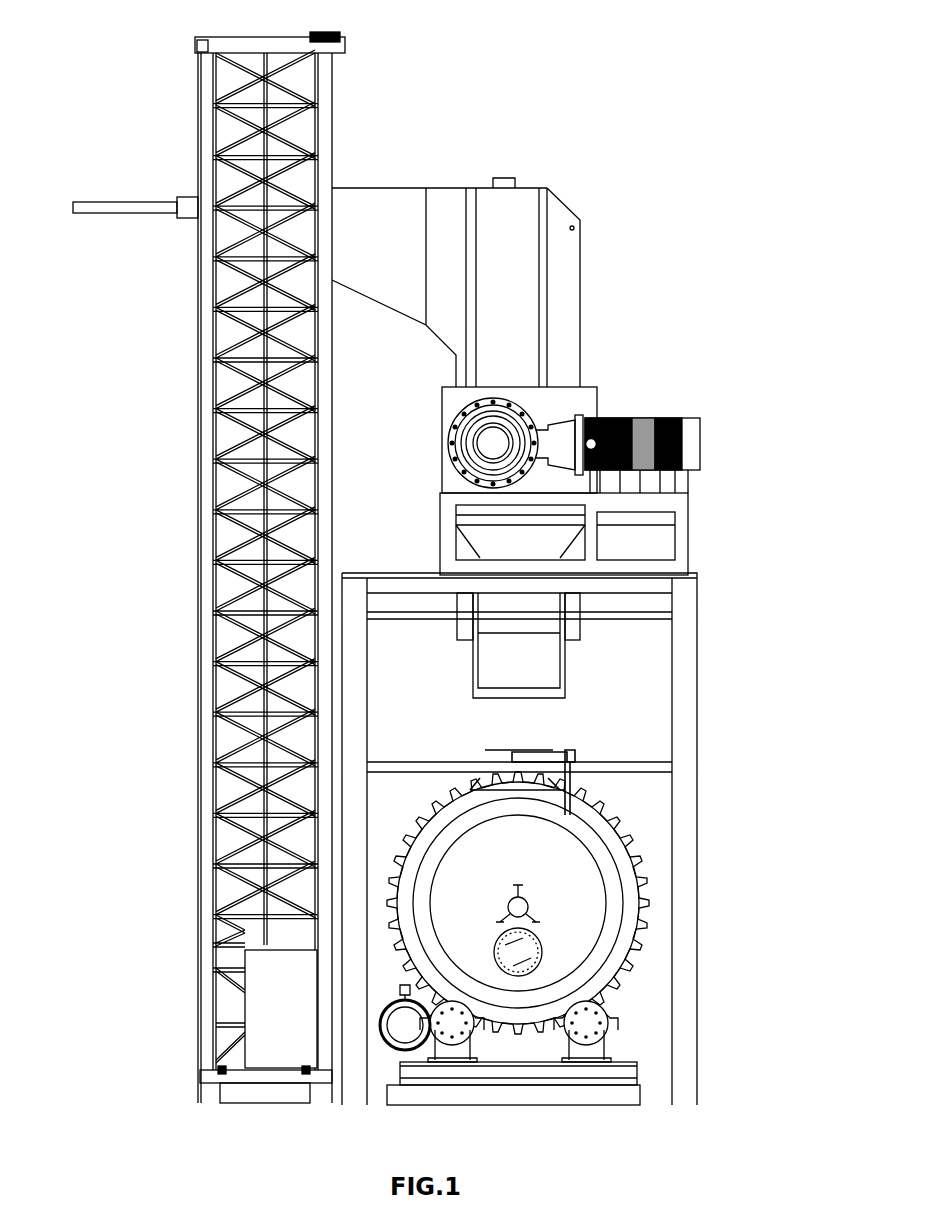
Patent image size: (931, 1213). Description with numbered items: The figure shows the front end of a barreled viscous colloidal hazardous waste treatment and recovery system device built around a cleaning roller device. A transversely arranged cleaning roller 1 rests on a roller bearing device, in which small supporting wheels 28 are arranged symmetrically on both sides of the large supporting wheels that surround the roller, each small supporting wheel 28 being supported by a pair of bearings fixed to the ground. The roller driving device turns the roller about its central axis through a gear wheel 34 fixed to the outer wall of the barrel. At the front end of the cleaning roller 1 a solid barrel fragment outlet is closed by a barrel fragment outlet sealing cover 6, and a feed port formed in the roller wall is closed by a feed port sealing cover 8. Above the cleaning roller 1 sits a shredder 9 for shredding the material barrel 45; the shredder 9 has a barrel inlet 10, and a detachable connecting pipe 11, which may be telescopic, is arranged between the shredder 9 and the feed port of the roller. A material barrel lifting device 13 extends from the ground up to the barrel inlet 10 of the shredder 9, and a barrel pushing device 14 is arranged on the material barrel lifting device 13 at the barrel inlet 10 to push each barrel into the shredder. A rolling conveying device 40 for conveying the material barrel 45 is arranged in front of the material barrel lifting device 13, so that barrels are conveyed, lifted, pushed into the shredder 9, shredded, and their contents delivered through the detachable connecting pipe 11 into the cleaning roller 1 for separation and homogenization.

The cleaning roller 1 is at (565, 890).
The barrel fragment outlet sealing cover 6 is at (548, 950).
The feed port sealing cover 8 is at (540, 780).
The shredder 9 is at (585, 395).
The barrel inlet 10 is at (368, 235).
The detachable connecting pipe 11 is at (525, 672).
The material barrel lifting device 13 is at (200, 762).
The barrel pushing device 14 is at (182, 200).
The small supporting wheel 28 is at (612, 1028).
The gear wheel 34 is at (632, 828).
The rolling conveying device 40 is at (215, 1078).
The material barrel 45 is at (275, 1003).